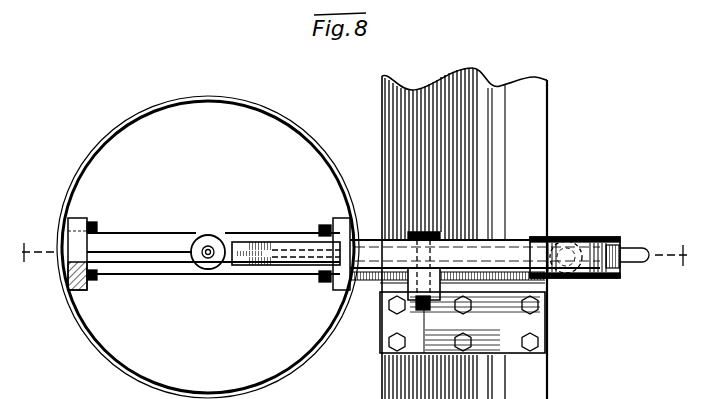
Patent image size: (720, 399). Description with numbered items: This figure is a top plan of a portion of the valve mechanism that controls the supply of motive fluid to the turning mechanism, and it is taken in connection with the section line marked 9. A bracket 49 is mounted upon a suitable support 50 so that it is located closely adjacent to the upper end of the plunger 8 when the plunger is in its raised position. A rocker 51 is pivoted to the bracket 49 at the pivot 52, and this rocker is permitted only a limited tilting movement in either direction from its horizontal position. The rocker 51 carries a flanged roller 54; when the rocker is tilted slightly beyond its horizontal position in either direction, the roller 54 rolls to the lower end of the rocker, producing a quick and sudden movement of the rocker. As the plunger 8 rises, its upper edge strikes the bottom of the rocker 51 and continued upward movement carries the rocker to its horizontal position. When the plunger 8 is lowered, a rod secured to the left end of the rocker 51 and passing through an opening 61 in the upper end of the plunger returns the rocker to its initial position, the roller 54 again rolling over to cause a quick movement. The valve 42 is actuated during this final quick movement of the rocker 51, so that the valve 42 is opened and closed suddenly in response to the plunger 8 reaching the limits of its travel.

The plunger 8 is at (303, 377).
The section line 9- 9 is at (355, 254).
The valve 42 is at (588, 279).
The bracket 49 is at (540, 323).
The support 50 is at (540, 142).
The rocker 51 is at (492, 240).
The pivot 52 is at (408, 300).
The flanged roller 54 is at (591, 238).
The opening 61 is at (206, 259).